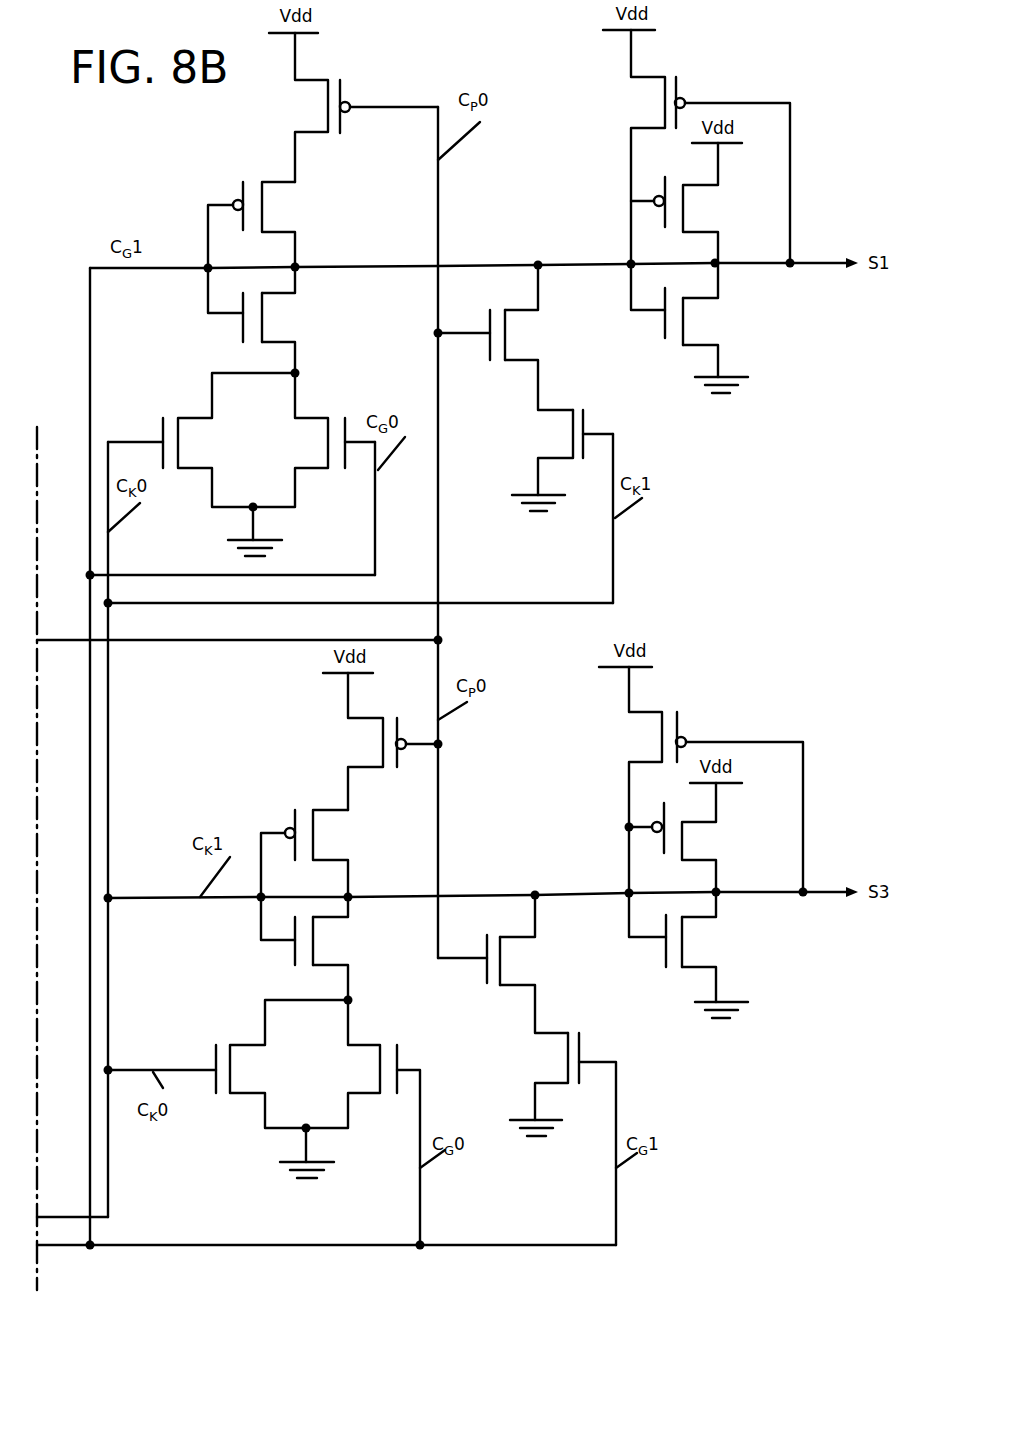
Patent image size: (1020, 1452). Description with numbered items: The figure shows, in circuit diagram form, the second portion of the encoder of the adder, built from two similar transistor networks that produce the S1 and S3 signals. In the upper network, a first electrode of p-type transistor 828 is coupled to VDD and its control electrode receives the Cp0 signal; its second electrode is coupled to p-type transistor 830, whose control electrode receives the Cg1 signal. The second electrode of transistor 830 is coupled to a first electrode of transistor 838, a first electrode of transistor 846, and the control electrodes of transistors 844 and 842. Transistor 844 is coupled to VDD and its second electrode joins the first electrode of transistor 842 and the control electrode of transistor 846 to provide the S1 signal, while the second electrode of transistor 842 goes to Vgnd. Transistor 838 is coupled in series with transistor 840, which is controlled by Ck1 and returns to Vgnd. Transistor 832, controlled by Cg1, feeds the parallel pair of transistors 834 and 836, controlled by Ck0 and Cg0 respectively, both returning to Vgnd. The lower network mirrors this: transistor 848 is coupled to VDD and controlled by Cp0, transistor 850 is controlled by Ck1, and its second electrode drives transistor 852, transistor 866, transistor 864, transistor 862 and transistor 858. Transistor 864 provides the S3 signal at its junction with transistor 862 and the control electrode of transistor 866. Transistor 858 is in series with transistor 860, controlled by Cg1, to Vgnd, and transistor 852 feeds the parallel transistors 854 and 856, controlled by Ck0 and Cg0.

The transistor 828 is at (345, 120).
The transistor 830 is at (243, 192).
The transistor 832 is at (243, 335).
The transistor 834 is at (162, 428).
The transistor 836 is at (340, 470).
The transistor 838 is at (485, 353).
The transistor 840 is at (585, 425).
The transistor 842 is at (663, 328).
The transistor 844 is at (663, 183).
The transistor 846 is at (675, 83).
The transistor 848 is at (393, 745).
The transistor 850 is at (293, 817).
The transistor 852 is at (298, 952).
The transistor 854 is at (213, 1053).
The transistor 856 is at (392, 1097).
The transistor 858 is at (485, 975).
The transistor 860 is at (580, 1053).
The transistor 862 is at (663, 950).
The transistor 864 is at (663, 848).
The transistor 866 is at (678, 728).